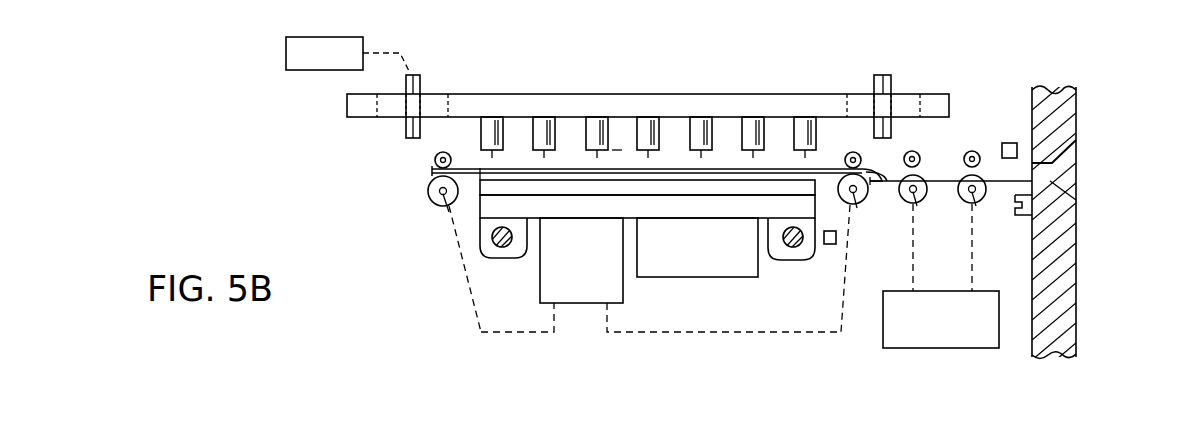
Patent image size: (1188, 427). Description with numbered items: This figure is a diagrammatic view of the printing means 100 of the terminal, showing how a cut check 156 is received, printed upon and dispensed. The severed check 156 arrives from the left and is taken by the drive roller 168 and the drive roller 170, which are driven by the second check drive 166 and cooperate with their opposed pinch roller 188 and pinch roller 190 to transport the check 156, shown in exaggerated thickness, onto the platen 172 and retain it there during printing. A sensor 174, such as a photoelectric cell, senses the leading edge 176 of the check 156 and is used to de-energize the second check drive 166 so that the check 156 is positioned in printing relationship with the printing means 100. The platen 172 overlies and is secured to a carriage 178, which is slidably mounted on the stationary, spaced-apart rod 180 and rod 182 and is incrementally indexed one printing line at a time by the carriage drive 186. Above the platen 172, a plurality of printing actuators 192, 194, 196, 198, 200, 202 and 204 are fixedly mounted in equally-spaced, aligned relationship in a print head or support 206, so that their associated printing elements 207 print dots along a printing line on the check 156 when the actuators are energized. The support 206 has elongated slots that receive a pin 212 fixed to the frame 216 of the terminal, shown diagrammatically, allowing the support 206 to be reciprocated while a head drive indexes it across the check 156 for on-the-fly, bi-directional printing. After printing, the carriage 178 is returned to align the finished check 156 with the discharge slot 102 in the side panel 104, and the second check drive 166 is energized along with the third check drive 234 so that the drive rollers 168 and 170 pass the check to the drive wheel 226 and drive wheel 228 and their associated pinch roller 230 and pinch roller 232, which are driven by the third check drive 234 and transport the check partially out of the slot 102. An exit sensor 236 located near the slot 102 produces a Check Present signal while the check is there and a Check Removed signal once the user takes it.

The printing means 100 is at (396, 152).
The discharge slot 102 is at (1062, 183).
The side panel 104 is at (1065, 284).
The check 156 is at (470, 165).
The check drive #2 166 is at (590, 303).
The drive roller 168 is at (430, 196).
The drive roller 170 is at (856, 202).
The platen 172 is at (488, 182).
The sensor 174 is at (830, 245).
The leading edge 176 is at (883, 177).
The carriage 178 is at (490, 209).
The rod 180 is at (500, 247).
The rod 182 is at (793, 247).
The carriage drive 186 is at (700, 277).
The pinch roller 188 is at (434, 163).
The pinch roller 190 is at (853, 150).
The printing actuator 192 is at (492, 135).
The printing actuator 194 is at (544, 135).
The printing actuator 196 is at (597, 135).
The printing actuator 198 is at (648, 135).
The printing actuator 200 is at (701, 135).
The printing actuator 202 is at (753, 135).
The printing actuator 204 is at (805, 135).
The print head support 206 is at (340, 104).
The printing element 207 is at (617, 148).
The pin 212 is at (415, 75).
The frame 216 is at (285, 53).
The drive wheel 226 is at (918, 204).
The drive wheel 228 is at (979, 204).
The pinch roller 230 is at (912, 150).
The pinch roller 232 is at (972, 150).
The check drive #3 234 is at (883, 331).
The exit sensor 236 is at (1010, 143).